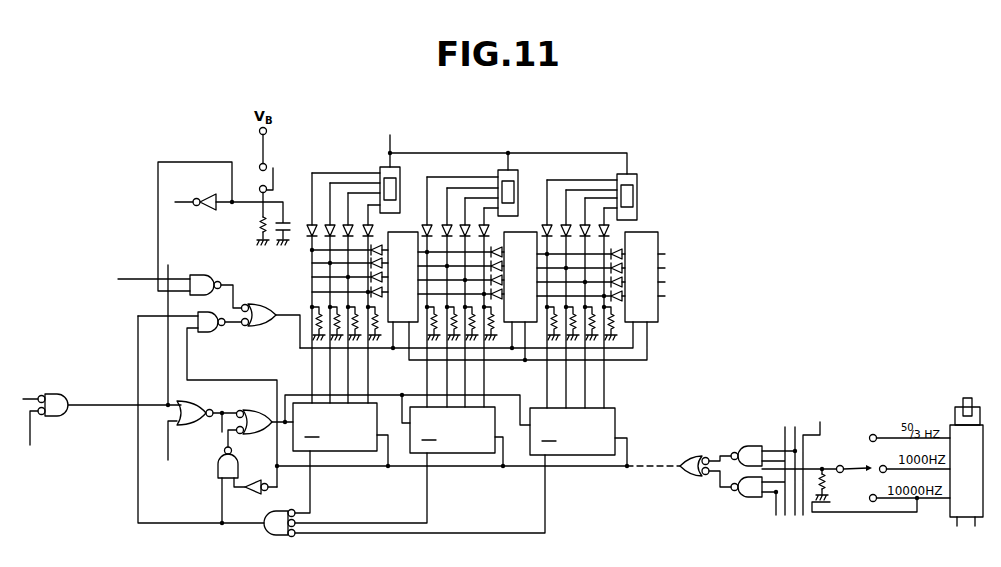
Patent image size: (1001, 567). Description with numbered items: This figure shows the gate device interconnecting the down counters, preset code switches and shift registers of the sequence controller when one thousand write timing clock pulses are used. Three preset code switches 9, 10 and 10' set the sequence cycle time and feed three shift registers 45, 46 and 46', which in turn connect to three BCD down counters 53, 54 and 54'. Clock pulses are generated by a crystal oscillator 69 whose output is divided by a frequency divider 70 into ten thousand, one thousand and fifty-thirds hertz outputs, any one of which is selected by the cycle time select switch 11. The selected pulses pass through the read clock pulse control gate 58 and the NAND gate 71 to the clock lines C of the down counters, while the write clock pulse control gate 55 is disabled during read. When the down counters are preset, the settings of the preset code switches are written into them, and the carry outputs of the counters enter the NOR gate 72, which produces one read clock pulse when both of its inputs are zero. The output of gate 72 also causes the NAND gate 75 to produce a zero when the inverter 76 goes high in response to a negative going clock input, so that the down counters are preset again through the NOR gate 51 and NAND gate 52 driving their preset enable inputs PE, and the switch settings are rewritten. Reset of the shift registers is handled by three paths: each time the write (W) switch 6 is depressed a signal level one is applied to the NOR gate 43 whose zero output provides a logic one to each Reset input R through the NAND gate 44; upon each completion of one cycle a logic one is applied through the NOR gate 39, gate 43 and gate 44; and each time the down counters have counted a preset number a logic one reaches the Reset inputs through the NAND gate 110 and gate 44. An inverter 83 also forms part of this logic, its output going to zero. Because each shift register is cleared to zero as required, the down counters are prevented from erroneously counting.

The inverter 83 is at (197, 192).
The write (W) switch 6 is at (281, 183).
The 2-input NOR gate 43 is at (205, 275).
The 2-input NAND gate 44 is at (259, 306).
The 2-input NAND gate 110 is at (212, 333).
The 2-input NOR gate 39 is at (53, 394).
The 2-input NOR gate 51 is at (195, 421).
The 2-input NAND gate 52 is at (255, 412).
The 2-input NAND gate 75 is at (215, 464).
The inverter 76 is at (256, 477).
The 2-input NOR gate 72 is at (279, 533).
The BCD down counter 54' is at (335, 427).
The BCD down counter 54 is at (452, 430).
The BCD down counter 53 is at (572, 431).
The shift register 46' is at (403, 277).
The shift register 46 is at (520, 277).
The shift register 45 is at (641, 277).
The preset code switch 10' is at (373, 183).
The preset code switch 10 is at (490, 187).
The preset code switch 9 is at (618, 177).
The 2-input NAND gate 71 is at (694, 458).
The read clock pulse control gate 58 is at (746, 447).
The write clock pulse control gate 55 is at (746, 497).
The cycle time select switch 11 is at (848, 467).
The crystal oscillator 69 is at (967, 401).
The frequency divider 70 is at (966, 475).